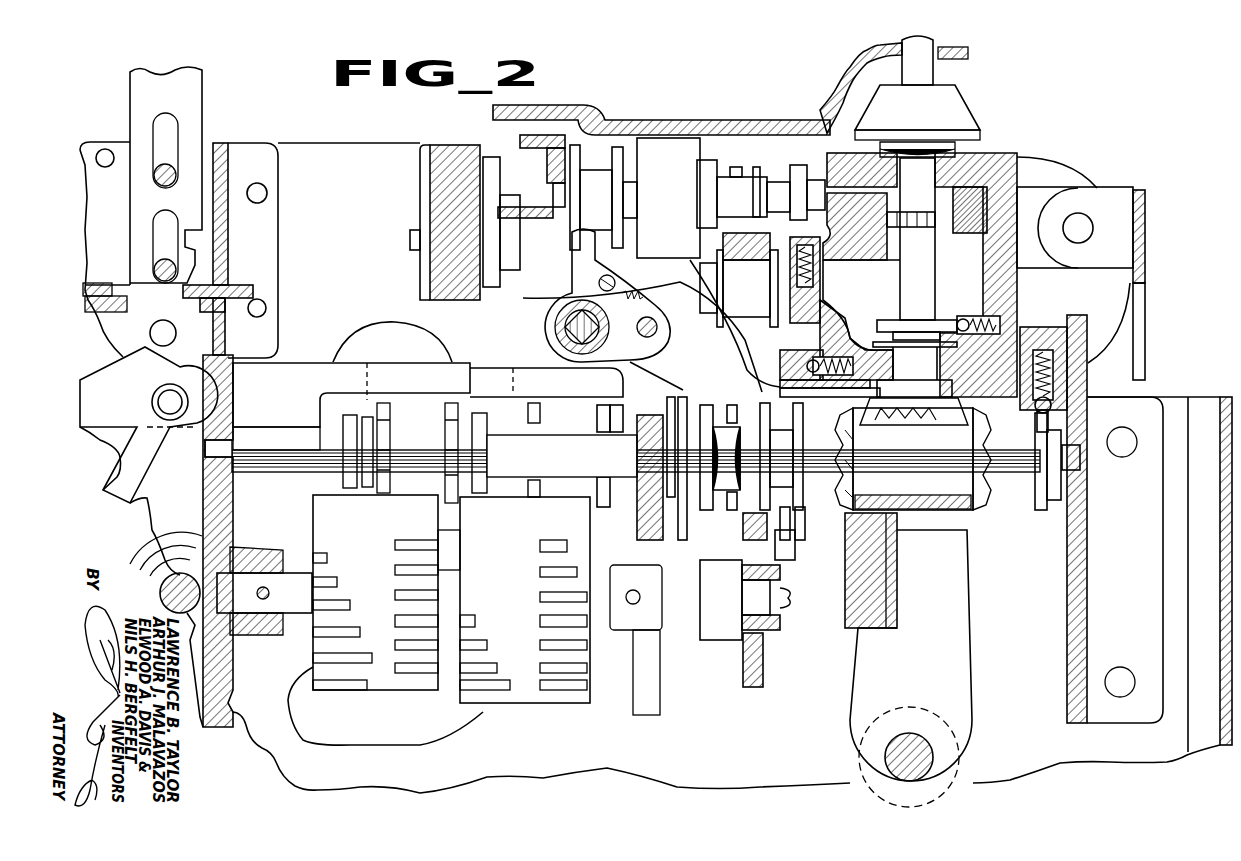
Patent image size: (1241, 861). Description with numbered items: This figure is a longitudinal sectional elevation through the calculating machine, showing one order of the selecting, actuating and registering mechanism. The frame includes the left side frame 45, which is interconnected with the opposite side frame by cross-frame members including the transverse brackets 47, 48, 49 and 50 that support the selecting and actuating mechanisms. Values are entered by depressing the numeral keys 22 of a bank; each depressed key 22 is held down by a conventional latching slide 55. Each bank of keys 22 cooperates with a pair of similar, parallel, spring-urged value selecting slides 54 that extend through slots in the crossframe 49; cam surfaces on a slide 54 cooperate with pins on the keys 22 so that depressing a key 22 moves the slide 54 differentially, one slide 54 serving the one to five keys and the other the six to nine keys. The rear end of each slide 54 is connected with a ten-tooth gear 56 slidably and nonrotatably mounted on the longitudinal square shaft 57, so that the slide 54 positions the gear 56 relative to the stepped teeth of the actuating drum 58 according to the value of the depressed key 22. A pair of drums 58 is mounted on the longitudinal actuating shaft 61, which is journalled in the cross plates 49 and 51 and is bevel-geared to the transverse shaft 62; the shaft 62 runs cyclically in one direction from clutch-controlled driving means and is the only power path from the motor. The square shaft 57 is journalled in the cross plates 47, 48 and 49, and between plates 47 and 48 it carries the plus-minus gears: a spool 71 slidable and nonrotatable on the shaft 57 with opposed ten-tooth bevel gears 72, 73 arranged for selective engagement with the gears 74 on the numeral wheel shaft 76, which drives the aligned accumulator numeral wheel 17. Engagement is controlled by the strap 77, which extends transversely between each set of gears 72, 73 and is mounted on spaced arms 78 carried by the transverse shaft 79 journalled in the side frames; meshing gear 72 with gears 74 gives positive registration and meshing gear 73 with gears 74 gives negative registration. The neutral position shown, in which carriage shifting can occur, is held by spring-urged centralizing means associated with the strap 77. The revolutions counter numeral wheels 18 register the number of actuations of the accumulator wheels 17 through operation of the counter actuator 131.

The numeral wheels 17 is at (950, 112).
The numeral wheels 18 is at (663, 150).
The numeral keys 22 is at (190, 107).
The left side frame 45 is at (347, 158).
The transverse bracket 47 is at (1075, 560).
The transverse bracket 48 is at (640, 545).
The transverse bracket 49 is at (206, 478).
The transverse bracket 50 is at (448, 160).
The cross plate 51 is at (757, 663).
The value selecting slides 54 is at (291, 370).
The latching slide 55 is at (96, 290).
The 10-tooth gear 56 is at (450, 412).
The longitudinal square shaft 57 is at (256, 438).
The actuating drum 58 is at (372, 690).
The longitudinal actuating shaft 61 is at (297, 575).
The transverse shaft 62 is at (178, 548).
The spool 71 is at (917, 480).
The bevel gear 72 is at (846, 459).
The bevel gear 73 is at (982, 462).
The gears 74 is at (915, 425).
The numeral wheel shaft 76 is at (925, 277).
The strap 77 is at (935, 512).
The arms 78 is at (955, 617).
The transverse shaft 79 is at (912, 757).
The counter actuator 131 is at (517, 331).